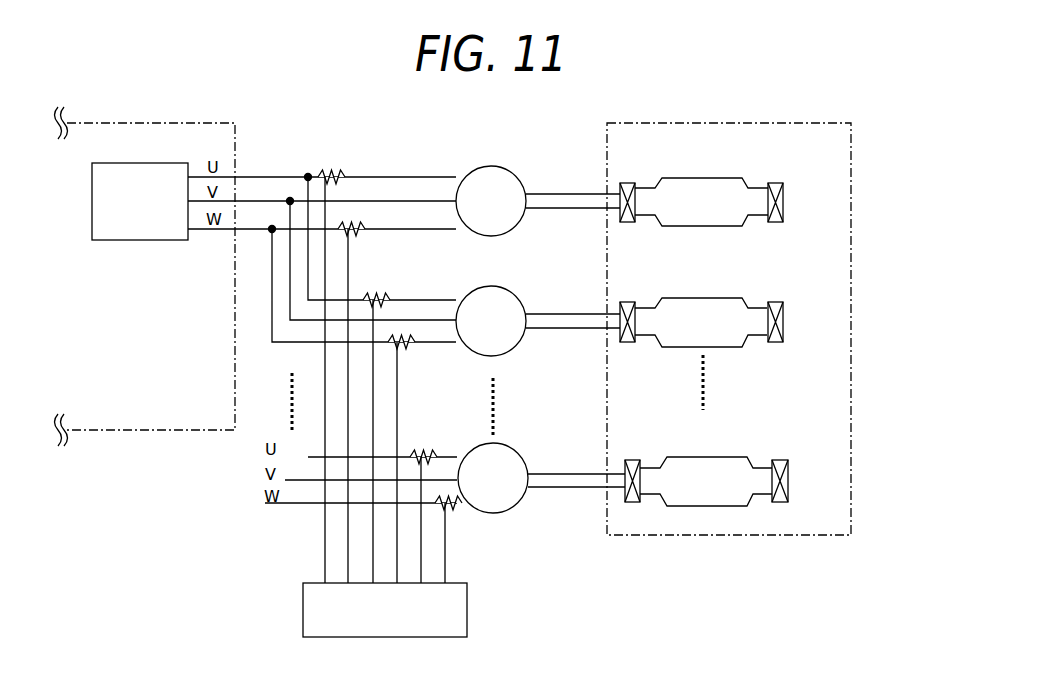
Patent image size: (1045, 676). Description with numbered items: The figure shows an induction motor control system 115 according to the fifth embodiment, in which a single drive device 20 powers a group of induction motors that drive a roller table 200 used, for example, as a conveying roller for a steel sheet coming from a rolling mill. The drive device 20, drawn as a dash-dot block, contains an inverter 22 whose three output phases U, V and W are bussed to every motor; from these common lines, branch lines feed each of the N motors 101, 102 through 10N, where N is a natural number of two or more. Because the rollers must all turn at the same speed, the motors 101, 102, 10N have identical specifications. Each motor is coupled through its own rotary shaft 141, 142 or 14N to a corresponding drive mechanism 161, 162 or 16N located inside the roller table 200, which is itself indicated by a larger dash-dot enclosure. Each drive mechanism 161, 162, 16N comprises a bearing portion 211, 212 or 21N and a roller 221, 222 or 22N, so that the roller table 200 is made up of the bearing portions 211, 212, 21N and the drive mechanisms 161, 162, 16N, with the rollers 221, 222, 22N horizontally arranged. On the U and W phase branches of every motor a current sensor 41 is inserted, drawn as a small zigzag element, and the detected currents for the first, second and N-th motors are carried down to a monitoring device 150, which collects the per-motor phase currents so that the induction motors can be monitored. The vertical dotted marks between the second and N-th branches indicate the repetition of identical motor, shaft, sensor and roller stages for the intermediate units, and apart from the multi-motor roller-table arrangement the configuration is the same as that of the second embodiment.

The drive device 20 is at (173, 123).
The inverter 22 is at (136, 163).
The current sensor 41 is at (357, 222).
The motor 101 is at (496, 166).
The motor 102 is at (497, 286).
The motor 10N is at (498, 443).
The rotary shaft 141 is at (563, 194).
The rotary shaft 142 is at (563, 314).
The rotary shaft 14N is at (565, 474).
The roller table 200 is at (850, 150).
The bearing portion 211 is at (625, 183).
The bearing portion 212 is at (625, 302).
The bearing portion 21N is at (630, 460).
The roller 221 is at (692, 178).
The roller 222 is at (692, 298).
The roller 22N is at (697, 457).
The drive mechanism 161 is at (798, 202).
The drive mechanism 162 is at (798, 322).
The drive mechanism 16N is at (803, 482).
The monitoring device 150 is at (467, 607).
The induction motor control system 115 is at (616, 590).